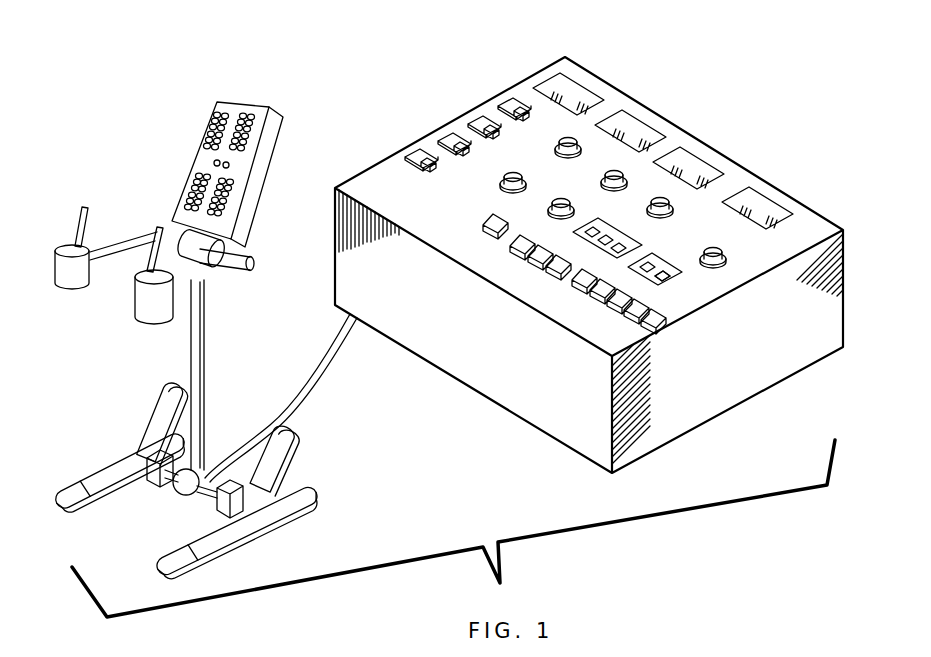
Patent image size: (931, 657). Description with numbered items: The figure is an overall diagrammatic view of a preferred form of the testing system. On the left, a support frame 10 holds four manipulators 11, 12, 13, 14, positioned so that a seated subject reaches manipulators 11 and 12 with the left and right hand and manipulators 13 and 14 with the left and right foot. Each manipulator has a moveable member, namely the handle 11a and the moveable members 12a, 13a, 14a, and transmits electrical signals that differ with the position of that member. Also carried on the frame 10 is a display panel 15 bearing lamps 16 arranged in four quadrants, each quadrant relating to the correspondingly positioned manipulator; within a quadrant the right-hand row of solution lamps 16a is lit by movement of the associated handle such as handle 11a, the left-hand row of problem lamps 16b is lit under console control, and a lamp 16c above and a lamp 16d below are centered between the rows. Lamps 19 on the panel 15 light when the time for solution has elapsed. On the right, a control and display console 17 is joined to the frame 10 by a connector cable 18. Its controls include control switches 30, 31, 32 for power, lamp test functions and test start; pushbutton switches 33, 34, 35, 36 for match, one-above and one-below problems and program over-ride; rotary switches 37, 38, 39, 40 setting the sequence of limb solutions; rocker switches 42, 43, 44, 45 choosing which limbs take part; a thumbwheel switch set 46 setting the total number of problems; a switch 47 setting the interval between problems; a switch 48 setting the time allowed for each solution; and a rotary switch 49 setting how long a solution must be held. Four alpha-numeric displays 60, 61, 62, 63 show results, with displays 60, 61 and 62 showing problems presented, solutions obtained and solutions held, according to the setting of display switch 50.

The support frame 10 is at (205, 335).
The manipulator 11 is at (56, 268).
The handle 11a is at (89, 216).
The manipulator 12 is at (147, 303).
The moveable member 12a is at (147, 262).
The manipulator 13 is at (97, 475).
The moveable member 13a is at (160, 408).
The manipulator 14 is at (245, 533).
The moveable member 14a is at (302, 452).
The display panel 15 is at (247, 108).
The lamps 16 is at (262, 142).
The solution lamps 16a is at (228, 113).
The problem lamps 16b is at (218, 102).
The lamp 16c is at (223, 110).
The lamp 16d is at (211, 152).
The control and display console 17 is at (401, 150).
The connector cable 18 is at (273, 403).
The lamps 19 is at (229, 164).
The control switch 30 is at (655, 325).
The control switch 31 is at (612, 346).
The control switch 32 is at (587, 296).
The switch 33 is at (532, 256).
The switch 34 is at (517, 248).
The switch 35 is at (555, 272).
The switch 36 is at (485, 233).
The switch 37 is at (568, 143).
The switch 38 is at (620, 181).
The switch 39 is at (503, 186).
The switch 40 is at (565, 205).
The switch 42 is at (520, 112).
The switch 43 is at (492, 128).
The switch 44 is at (457, 148).
The switch 45 is at (428, 177).
The switch set 46 is at (615, 228).
The switch 47 is at (637, 273).
The switch 48 is at (677, 275).
The switch 49 is at (670, 208).
The display switch 50 is at (727, 260).
The alpha-numeric display 60 is at (572, 97).
The alpha-numeric display 61 is at (638, 130).
The alpha-numeric display 62 is at (703, 163).
The alpha-numeric display 63 is at (765, 213).